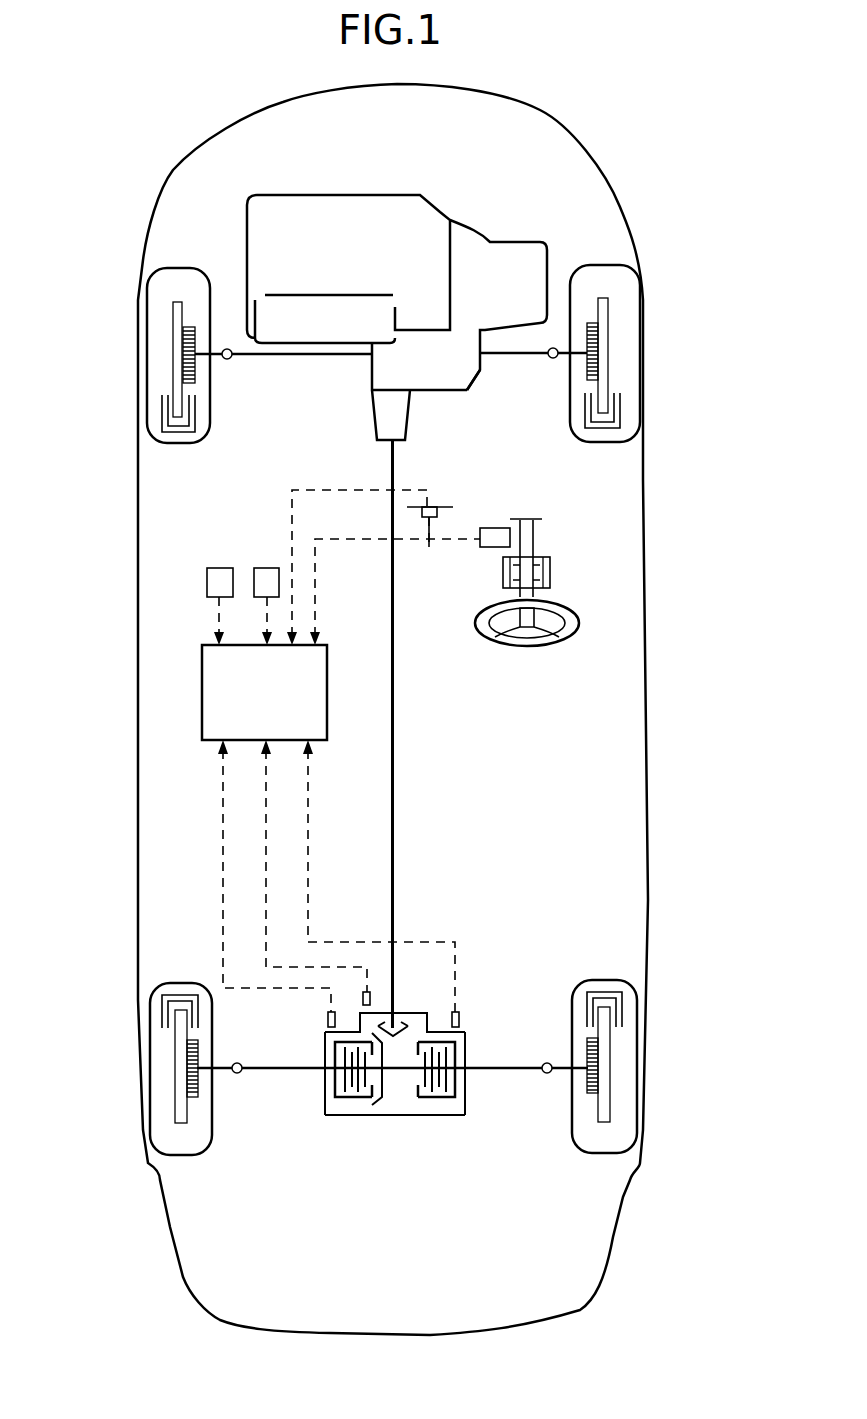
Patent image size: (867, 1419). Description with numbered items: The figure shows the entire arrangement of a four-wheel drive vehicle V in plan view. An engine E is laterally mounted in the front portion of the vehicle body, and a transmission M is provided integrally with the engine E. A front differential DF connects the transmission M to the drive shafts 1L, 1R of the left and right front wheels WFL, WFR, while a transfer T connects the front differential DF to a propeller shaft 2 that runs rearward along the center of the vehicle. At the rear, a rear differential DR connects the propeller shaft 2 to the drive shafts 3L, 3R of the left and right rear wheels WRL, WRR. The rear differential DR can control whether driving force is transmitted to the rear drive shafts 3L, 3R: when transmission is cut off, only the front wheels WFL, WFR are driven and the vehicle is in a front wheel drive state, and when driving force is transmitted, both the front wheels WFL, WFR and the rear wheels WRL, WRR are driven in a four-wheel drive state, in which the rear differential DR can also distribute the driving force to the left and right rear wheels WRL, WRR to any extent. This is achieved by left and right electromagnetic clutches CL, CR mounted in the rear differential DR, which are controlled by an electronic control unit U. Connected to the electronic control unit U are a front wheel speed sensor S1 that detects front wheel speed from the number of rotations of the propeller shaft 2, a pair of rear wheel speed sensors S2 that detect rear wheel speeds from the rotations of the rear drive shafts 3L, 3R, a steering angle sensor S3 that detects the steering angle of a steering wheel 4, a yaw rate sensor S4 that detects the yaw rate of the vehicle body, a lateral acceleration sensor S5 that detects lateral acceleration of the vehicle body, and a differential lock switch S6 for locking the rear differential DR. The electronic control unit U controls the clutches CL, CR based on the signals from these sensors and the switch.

The four-wheel drive vehicle V is at (657, 558).
The left front wheel WFL is at (147, 276).
The right front wheel WFR is at (640, 282).
The left rear wheel WRL is at (150, 988).
The right rear wheel WRR is at (630, 983).
The drive shaft of left front wheel 1L is at (270, 360).
The drive shaft of right front wheel 1R is at (523, 357).
The engine E is at (373, 213).
The transmission M is at (490, 255).
The transfer T is at (393, 417).
The front differential DF is at (458, 373).
The propeller shaft 2 is at (393, 687).
The steering wheel 4 is at (557, 635).
The front wheel speed sensor S1 is at (370, 992).
The rear wheel speed sensors S2 is at (472, 1013).
The steering angle sensor S3 is at (490, 528).
The yaw rate sensor S4 is at (263, 577).
The lateral acceleration sensor S5 is at (220, 582).
The differential lock switch S6 is at (432, 552).
The electronic control unit U is at (273, 710).
The rear differential DR is at (465, 962).
The drive shaft of left rear wheel 3L is at (287, 1072).
The drive shaft of right rear wheel 3R is at (507, 1073).
The left electromagnetic clutch CL is at (348, 1097).
The right electromagnetic clutch CR is at (445, 1105).